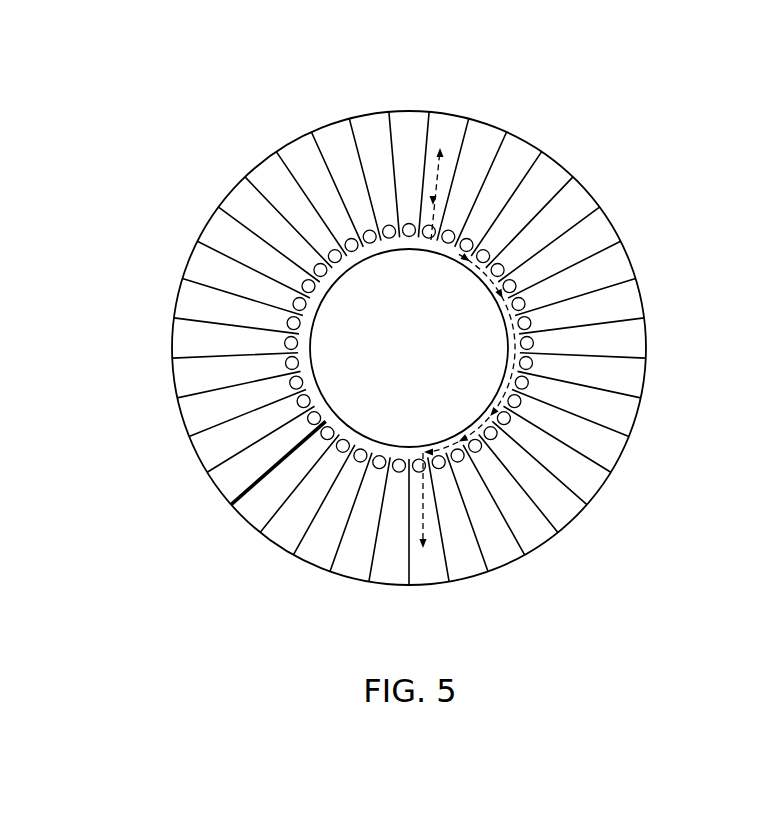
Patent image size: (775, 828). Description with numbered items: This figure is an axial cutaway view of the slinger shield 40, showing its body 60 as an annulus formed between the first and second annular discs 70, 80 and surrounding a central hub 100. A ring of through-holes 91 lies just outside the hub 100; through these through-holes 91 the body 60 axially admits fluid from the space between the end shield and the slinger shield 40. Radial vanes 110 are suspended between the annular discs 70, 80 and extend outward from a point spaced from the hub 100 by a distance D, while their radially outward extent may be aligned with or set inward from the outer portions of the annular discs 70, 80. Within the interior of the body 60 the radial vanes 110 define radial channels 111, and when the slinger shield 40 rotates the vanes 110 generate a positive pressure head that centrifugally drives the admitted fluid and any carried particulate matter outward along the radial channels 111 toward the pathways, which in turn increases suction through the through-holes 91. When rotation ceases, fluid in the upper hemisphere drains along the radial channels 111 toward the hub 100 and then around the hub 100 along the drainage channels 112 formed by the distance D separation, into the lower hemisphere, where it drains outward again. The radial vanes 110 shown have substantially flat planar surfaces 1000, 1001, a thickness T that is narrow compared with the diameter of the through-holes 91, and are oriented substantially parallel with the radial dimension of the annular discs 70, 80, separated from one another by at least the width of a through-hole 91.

The slinger shield 40 is at (573, 107).
The body 60 is at (592, 486).
The first annular disc 70 is at (645, 303).
The second annular disc 80 is at (645, 303).
The through-holes 91 is at (513, 281).
The hub 100 is at (313, 343).
The radial vanes 110 is at (424, 141).
The radial channels 111 is at (440, 176).
The drainage channels 112 is at (483, 273).
The substantially flat planar surface 1000 is at (185, 384).
The substantially flat planar surface 1001 is at (195, 403).
The thickness T is at (264, 497).
The distance D is at (391, 241).